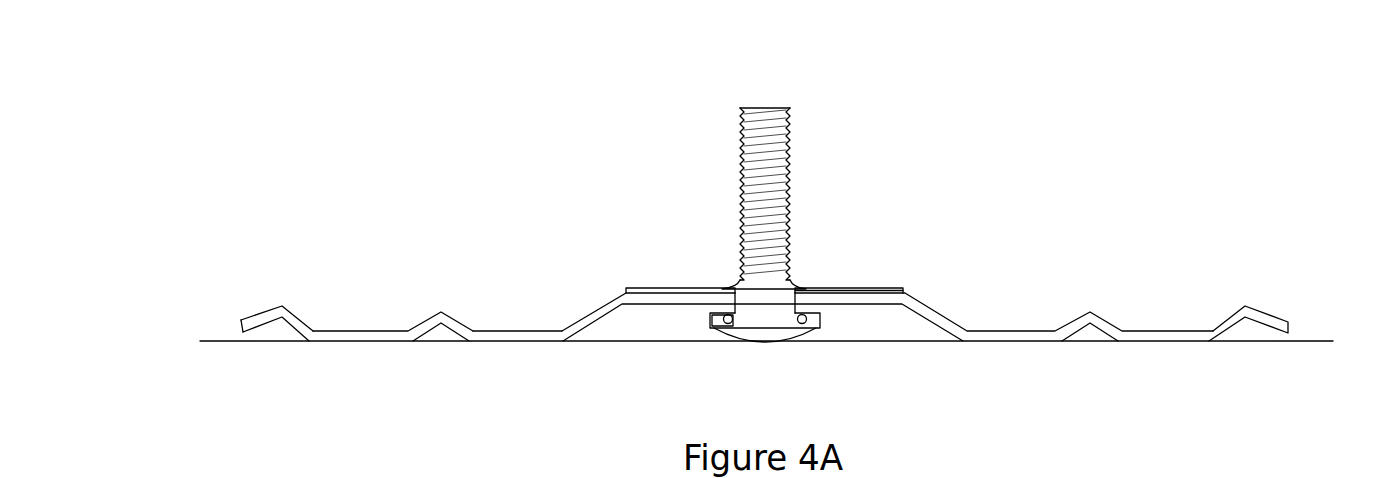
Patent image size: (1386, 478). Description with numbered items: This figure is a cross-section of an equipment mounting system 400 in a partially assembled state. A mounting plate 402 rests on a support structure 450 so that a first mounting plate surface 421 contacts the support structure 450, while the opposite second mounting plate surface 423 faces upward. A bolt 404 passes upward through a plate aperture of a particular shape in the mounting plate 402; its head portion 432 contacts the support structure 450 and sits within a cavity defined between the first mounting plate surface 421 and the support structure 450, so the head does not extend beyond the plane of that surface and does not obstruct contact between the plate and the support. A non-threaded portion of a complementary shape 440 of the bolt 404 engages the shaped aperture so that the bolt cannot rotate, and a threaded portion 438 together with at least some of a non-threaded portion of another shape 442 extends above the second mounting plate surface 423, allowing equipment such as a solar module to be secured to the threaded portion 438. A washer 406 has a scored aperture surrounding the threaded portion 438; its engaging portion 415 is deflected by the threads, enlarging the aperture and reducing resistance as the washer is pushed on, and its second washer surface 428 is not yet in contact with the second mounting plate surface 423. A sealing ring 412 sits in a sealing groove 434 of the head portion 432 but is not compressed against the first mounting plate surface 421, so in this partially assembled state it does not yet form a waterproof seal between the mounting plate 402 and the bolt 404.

The partially assembled equipment mounting system 400 is at (552, 108).
The mounting plate 402 is at (1267, 313).
The bolt 404 is at (763, 107).
The washer 406 is at (893, 288).
The sealing ring 412 is at (731, 326).
The engaging portion 415 is at (738, 283).
The first mounting plate surface 421 is at (360, 341).
The second mounting plate surface 423 is at (515, 330).
The second washer surface 428 is at (903, 292).
The head portion 432 is at (777, 345).
The sealing groove 434 is at (718, 328).
The threaded portion 438 is at (790, 163).
The non-threaded portion of a complementary shape 440 is at (783, 312).
The non-threaded portion of another shape 442 is at (776, 296).
The support structure 450 is at (263, 341).